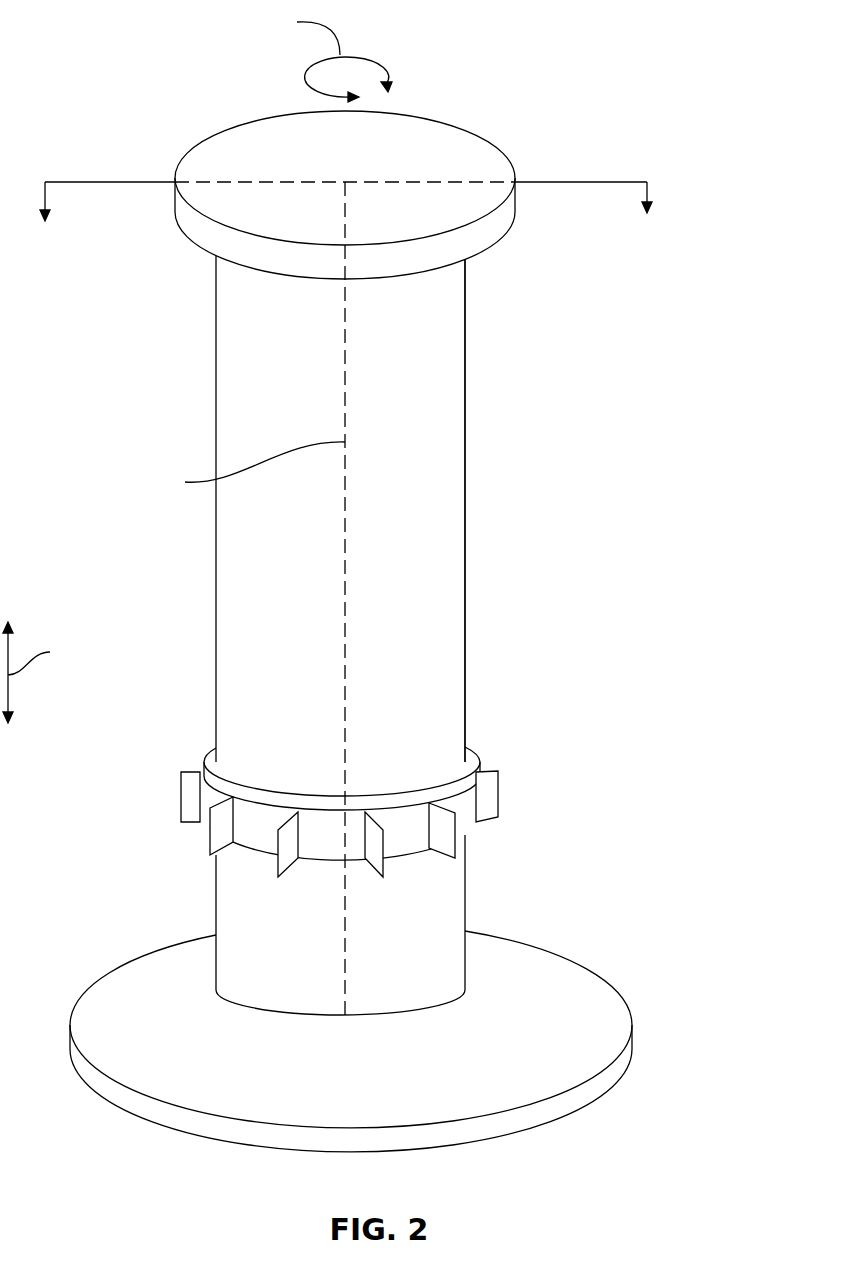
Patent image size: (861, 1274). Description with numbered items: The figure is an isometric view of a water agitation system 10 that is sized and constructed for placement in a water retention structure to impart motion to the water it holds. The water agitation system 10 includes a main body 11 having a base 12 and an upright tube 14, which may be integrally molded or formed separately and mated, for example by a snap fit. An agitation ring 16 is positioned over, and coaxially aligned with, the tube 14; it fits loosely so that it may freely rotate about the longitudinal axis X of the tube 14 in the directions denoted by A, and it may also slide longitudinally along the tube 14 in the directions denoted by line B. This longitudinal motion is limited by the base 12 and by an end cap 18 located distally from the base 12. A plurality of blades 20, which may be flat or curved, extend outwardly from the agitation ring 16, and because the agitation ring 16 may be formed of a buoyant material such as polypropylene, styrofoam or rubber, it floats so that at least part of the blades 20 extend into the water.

The water agitation system 10 is at (399, 580).
The main body 11 is at (466, 357).
The base 12 is at (381, 1041).
The upright tube 14 is at (458, 497).
The agitation ring 16 is at (468, 772).
The end cap 18 is at (445, 138).
The blades 20 is at (190, 798).